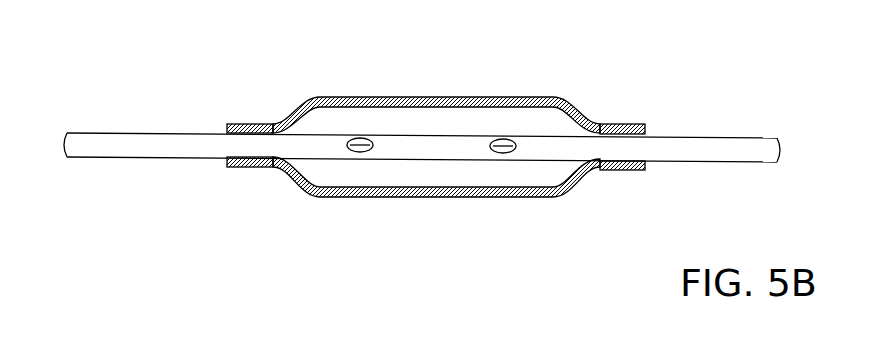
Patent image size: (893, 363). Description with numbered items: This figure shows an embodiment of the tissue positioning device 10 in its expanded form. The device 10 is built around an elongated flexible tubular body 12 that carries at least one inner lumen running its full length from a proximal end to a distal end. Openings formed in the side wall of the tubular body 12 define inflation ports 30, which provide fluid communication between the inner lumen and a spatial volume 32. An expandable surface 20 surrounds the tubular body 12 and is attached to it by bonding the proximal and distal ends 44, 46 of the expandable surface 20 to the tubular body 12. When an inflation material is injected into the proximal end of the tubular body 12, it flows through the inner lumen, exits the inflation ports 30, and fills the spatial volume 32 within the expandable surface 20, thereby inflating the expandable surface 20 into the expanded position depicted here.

The device 10 is at (438, 57).
The elongated flexible tubular body 12 is at (90, 133).
The expandable surface 20 is at (372, 97).
The inflation ports 30 is at (365, 140).
The spatial volume 32 is at (453, 170).
The proximal end of the expandable surface 44 is at (275, 117).
The distal end of the expandable surface 46 is at (600, 122).